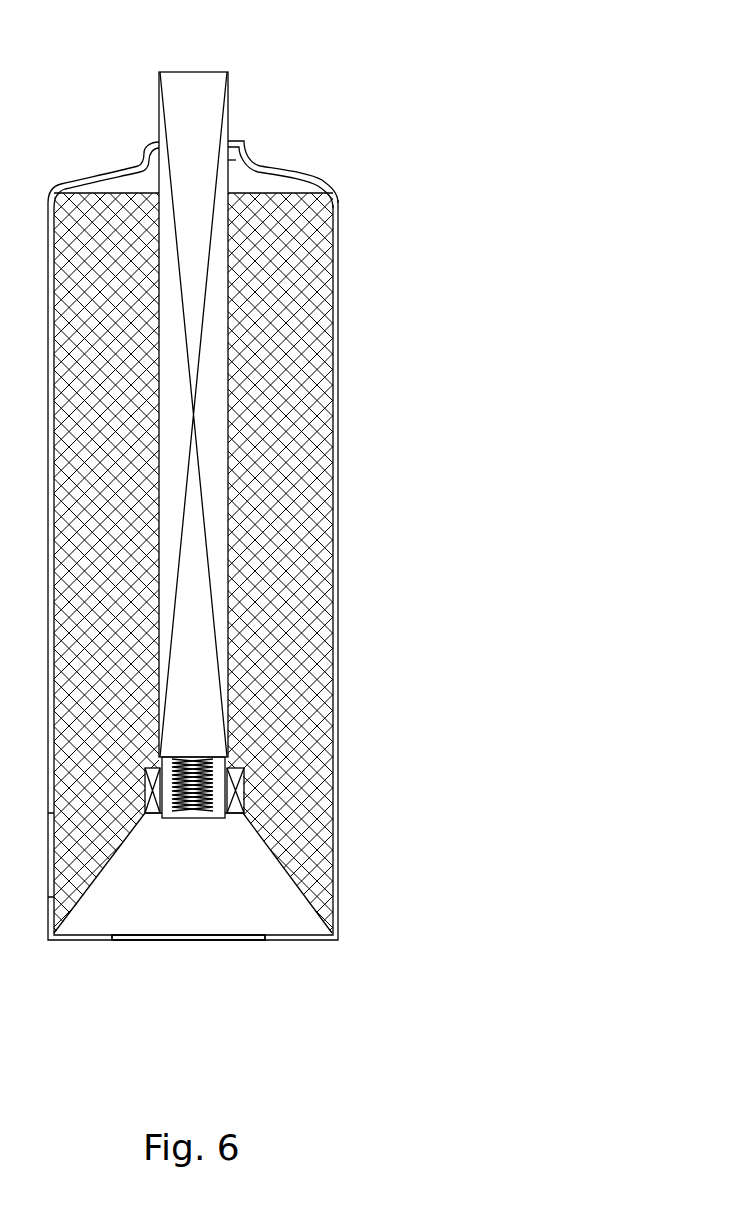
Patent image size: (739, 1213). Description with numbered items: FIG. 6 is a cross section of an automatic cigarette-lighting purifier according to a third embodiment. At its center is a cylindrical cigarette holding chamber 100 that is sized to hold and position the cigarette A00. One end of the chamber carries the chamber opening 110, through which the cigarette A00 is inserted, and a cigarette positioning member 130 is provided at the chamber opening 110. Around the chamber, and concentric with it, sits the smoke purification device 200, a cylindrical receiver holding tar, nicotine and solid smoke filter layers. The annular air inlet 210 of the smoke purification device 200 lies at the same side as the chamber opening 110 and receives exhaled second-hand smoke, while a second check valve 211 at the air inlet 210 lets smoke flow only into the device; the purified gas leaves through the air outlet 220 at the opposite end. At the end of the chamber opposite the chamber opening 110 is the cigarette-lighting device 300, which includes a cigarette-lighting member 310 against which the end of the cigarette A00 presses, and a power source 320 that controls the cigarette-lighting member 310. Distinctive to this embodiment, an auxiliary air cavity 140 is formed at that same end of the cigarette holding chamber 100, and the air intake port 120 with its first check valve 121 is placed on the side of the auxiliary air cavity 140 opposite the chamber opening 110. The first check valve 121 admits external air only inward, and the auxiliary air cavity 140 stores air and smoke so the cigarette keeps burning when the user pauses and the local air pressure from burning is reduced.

The cigarette holding chamber 100 is at (193, 625).
The chamber opening 110 is at (157, 142).
The air intake port 120 is at (177, 943).
The first check valve 121 is at (207, 938).
The cigarette positioning member 130 is at (202, 145).
The auxiliary air cavity 140 is at (247, 912).
The smoke purification device 200 is at (278, 462).
The air inlet 210 is at (246, 146).
The second check valve 211 is at (255, 158).
The air outlet 220 is at (342, 847).
The cigarette-lighting device 300 is at (316, 748).
The cigarette-lighting member 310 is at (213, 762).
The power source 320 is at (243, 797).
The cigarette A00 is at (207, 292).